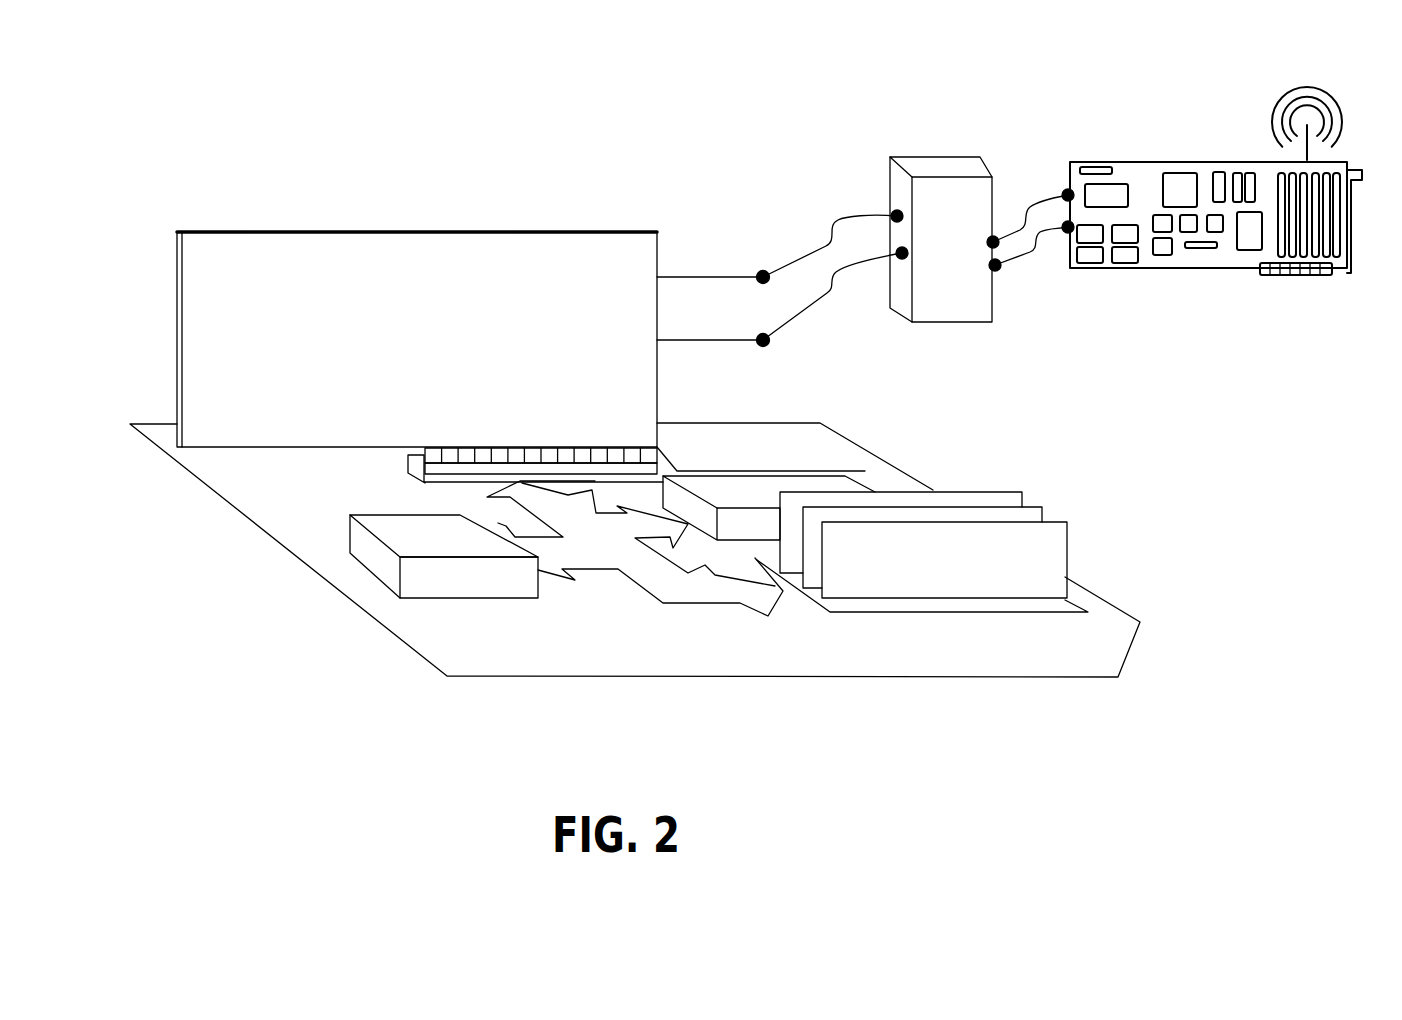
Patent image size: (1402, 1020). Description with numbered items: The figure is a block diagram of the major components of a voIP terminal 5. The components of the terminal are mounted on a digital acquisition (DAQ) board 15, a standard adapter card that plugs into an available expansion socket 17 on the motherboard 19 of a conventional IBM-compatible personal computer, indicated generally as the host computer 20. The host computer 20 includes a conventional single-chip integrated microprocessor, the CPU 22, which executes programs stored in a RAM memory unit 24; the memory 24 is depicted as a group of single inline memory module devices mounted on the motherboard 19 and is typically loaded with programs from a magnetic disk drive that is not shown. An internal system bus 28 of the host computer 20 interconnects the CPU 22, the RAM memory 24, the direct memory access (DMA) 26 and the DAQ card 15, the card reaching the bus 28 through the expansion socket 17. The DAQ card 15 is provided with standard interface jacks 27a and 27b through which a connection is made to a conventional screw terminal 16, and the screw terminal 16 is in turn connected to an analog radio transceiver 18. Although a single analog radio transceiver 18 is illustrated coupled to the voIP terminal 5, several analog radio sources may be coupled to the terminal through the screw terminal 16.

The voIP terminal 5 is at (1143, 757).
The digital acquisition (DAQ) board 15 is at (178, 338).
The screw terminal 16 is at (940, 157).
The socket 17 is at (412, 462).
The analog radio transceiver 18 is at (1212, 268).
The motherboard 19 is at (398, 603).
The host computer 20 is at (915, 447).
The microprocessor (CPU) 22 is at (348, 543).
The RAM memory unit 24 is at (942, 522).
The direct memory access (DMA) 26 is at (808, 475).
The interface jack 27a is at (763, 340).
The interface jack 27b is at (763, 277).
The internal system bus 28 is at (723, 588).